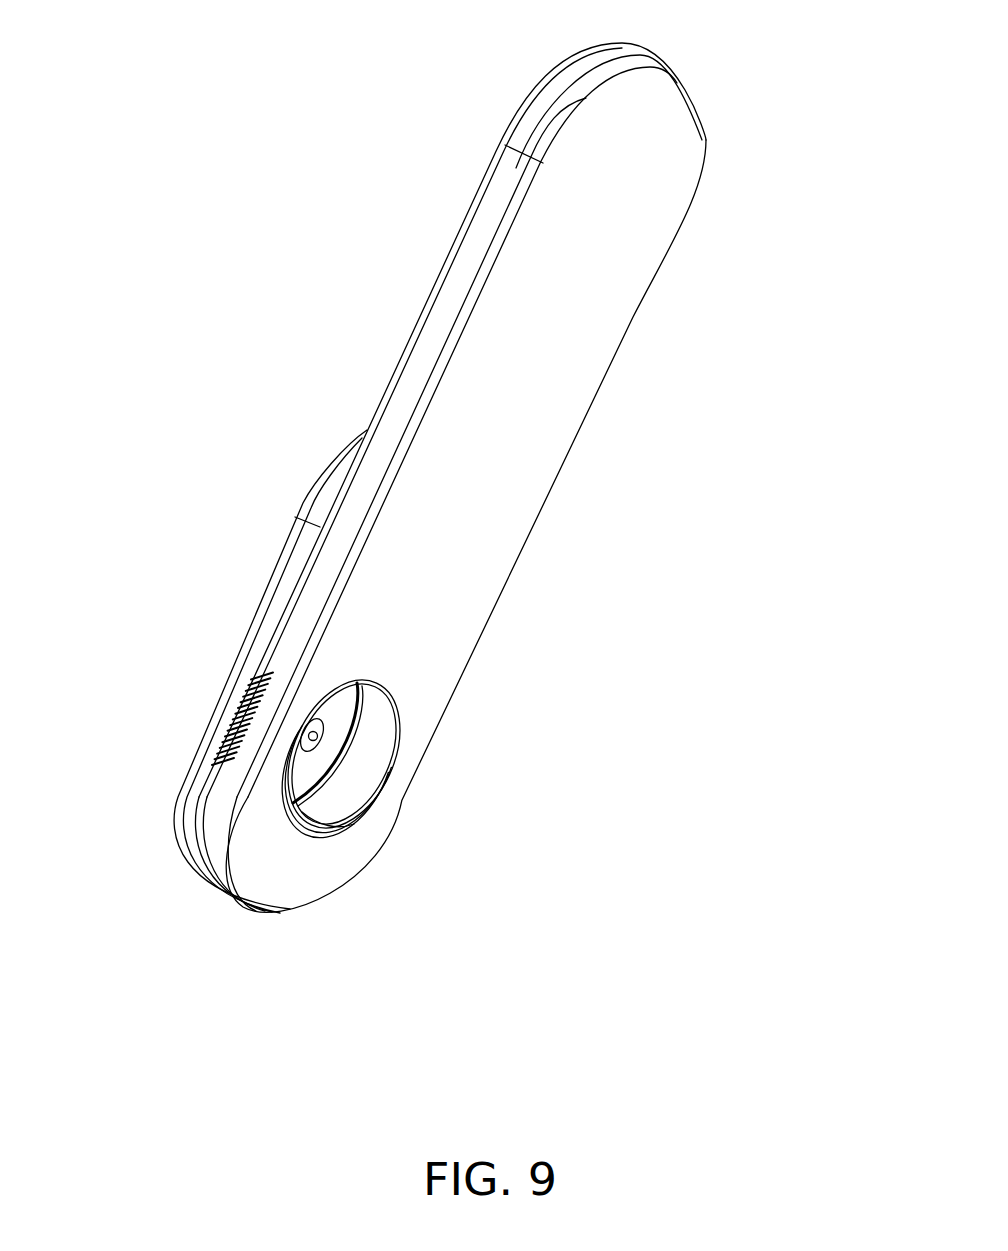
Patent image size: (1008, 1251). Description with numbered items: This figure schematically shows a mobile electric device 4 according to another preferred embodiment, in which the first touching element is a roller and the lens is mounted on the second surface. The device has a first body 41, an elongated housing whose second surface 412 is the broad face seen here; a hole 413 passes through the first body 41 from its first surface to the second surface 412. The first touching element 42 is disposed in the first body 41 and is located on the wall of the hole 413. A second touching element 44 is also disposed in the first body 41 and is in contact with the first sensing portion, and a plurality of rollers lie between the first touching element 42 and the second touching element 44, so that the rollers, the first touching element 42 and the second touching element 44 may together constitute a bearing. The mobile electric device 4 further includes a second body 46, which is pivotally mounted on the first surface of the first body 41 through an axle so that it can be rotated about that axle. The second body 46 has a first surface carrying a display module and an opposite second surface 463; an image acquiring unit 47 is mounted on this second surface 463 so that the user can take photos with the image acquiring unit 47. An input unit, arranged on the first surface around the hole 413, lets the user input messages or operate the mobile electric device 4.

The mobile electric device 4 is at (144, 49).
The first body 41 is at (700, 160).
The second surface 412 is at (508, 510).
The hole 413 is at (341, 799).
The first touching element 42 is at (377, 719).
The second touching element 44 is at (255, 765).
The second body 46 is at (220, 693).
The second surface of the second body 463 is at (307, 770).
The image acquiring unit 47 is at (323, 736).